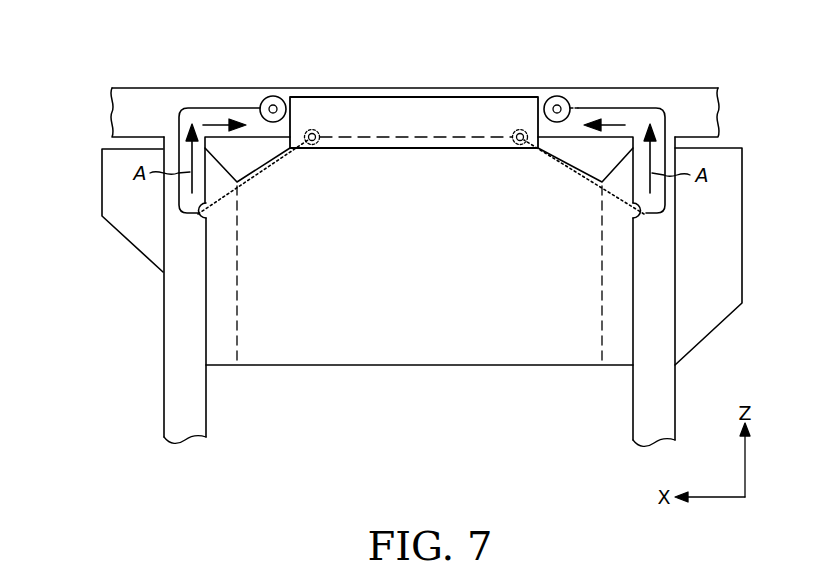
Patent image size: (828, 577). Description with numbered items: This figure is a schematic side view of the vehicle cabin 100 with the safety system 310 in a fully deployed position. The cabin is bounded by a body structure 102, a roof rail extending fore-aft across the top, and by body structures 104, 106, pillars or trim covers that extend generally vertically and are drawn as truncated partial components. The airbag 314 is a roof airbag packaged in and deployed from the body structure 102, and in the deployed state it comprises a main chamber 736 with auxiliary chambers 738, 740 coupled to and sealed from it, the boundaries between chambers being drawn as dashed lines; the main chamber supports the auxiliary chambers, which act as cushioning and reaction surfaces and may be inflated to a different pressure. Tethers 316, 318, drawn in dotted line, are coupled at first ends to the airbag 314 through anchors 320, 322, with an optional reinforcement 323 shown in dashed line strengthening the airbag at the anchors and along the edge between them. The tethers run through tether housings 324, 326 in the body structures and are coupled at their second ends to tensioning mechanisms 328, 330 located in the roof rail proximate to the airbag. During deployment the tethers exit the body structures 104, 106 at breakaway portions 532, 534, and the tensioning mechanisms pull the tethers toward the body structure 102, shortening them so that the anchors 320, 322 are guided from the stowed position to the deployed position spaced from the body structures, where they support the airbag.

The vehicle cabin 100 is at (409, 419).
The body structure 102 is at (130, 88).
The body structure 104 is at (164, 400).
The body structure 106 is at (633, 405).
The safety system 310 is at (283, 381).
The airbag 314 is at (415, 97).
The tether 316 is at (270, 170).
The tether 318 is at (572, 170).
The anchor 320 is at (316, 133).
The anchor 322 is at (518, 133).
The reinforcement 323 is at (418, 140).
The tether housing 324 is at (200, 108).
The tether housing 326 is at (638, 108).
The tensioning mechanism 328 is at (273, 96).
The tensioning mechanism 330 is at (557, 96).
The breakaway portion 532 is at (192, 220).
The breakaway portion 534 is at (644, 220).
The main chamber 736 is at (407, 276).
The auxiliary chamber 738 is at (742, 185).
The auxiliary chamber 740 is at (102, 175).